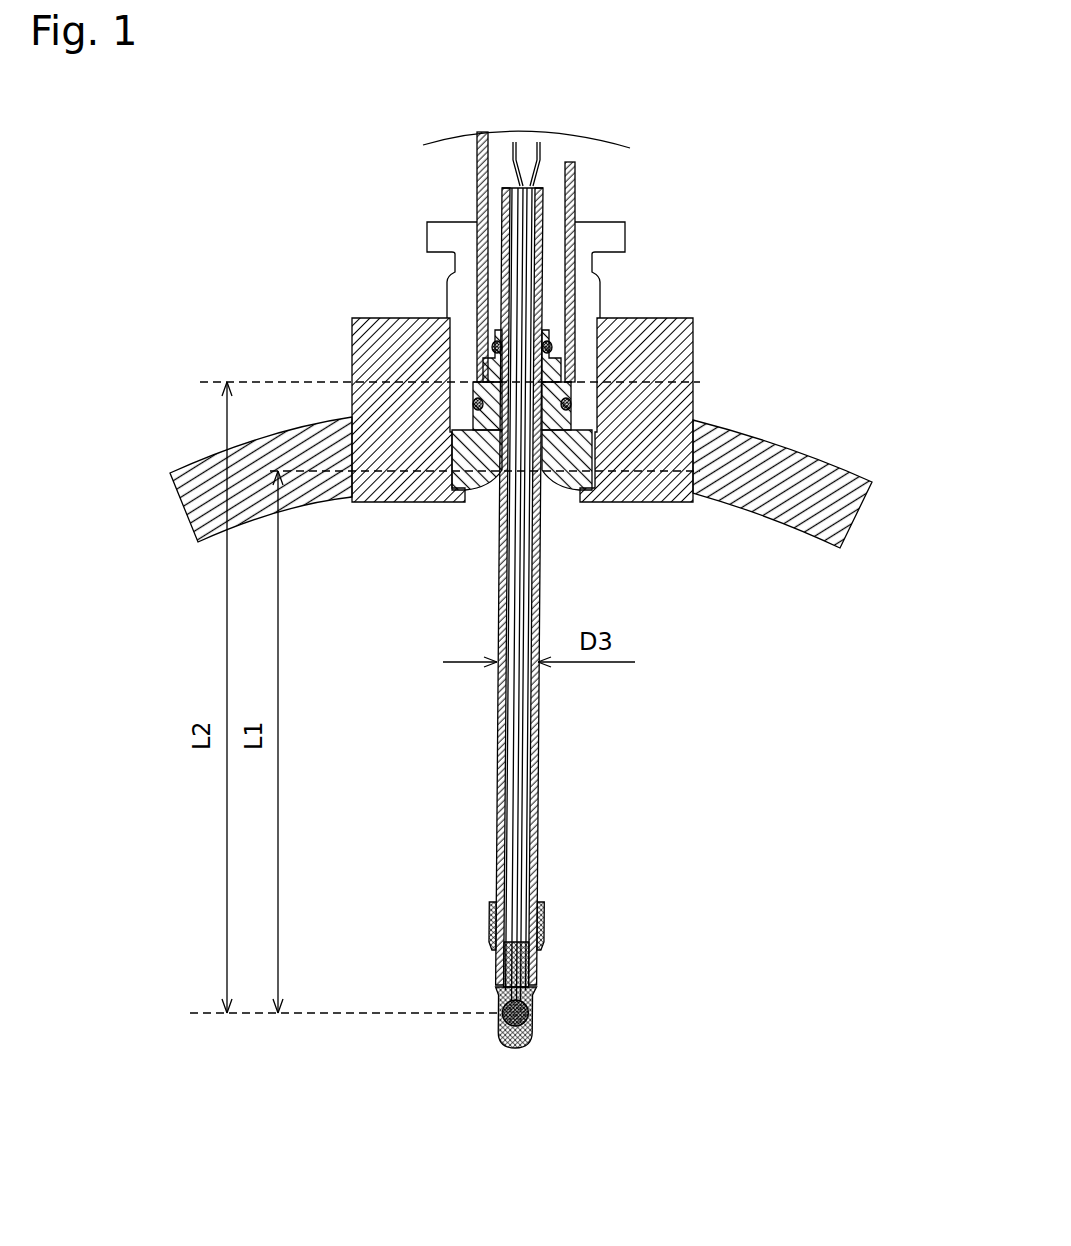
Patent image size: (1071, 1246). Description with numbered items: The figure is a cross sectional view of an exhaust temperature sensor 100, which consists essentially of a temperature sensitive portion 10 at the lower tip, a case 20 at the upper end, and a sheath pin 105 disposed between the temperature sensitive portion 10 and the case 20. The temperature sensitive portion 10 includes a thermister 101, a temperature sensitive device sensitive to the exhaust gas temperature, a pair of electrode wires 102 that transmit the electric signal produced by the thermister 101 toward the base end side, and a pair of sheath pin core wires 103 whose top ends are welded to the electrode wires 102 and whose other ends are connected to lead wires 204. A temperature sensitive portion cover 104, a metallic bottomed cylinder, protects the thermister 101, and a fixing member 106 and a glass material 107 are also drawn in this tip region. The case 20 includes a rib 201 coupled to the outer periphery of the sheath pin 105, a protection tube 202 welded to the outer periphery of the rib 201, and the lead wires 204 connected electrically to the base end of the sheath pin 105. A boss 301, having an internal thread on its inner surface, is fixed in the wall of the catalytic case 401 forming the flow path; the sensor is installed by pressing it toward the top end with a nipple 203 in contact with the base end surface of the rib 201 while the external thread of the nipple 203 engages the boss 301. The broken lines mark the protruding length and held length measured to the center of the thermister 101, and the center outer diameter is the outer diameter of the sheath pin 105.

The exhaust temperature sensor 100 is at (732, 180).
The temperature sensitive portion 10 is at (705, 888).
The case 20 is at (177, 188).
The thermister 101 is at (530, 1007).
The electrode wire 102 is at (499, 983).
The sheath pin core wire 103 is at (532, 883).
The temperature-sensitive portion cover 104 is at (542, 938).
The sheath pin 105 is at (540, 748).
The fixing member 106 is at (537, 813).
The glass material 107 is at (523, 1025).
The rib 201 is at (558, 487).
The protection tube 202 is at (573, 300).
The nipple 203 is at (467, 295).
The lead wire 204 is at (535, 181).
The boss 301 is at (693, 375).
The catalytic case 401 is at (827, 457).